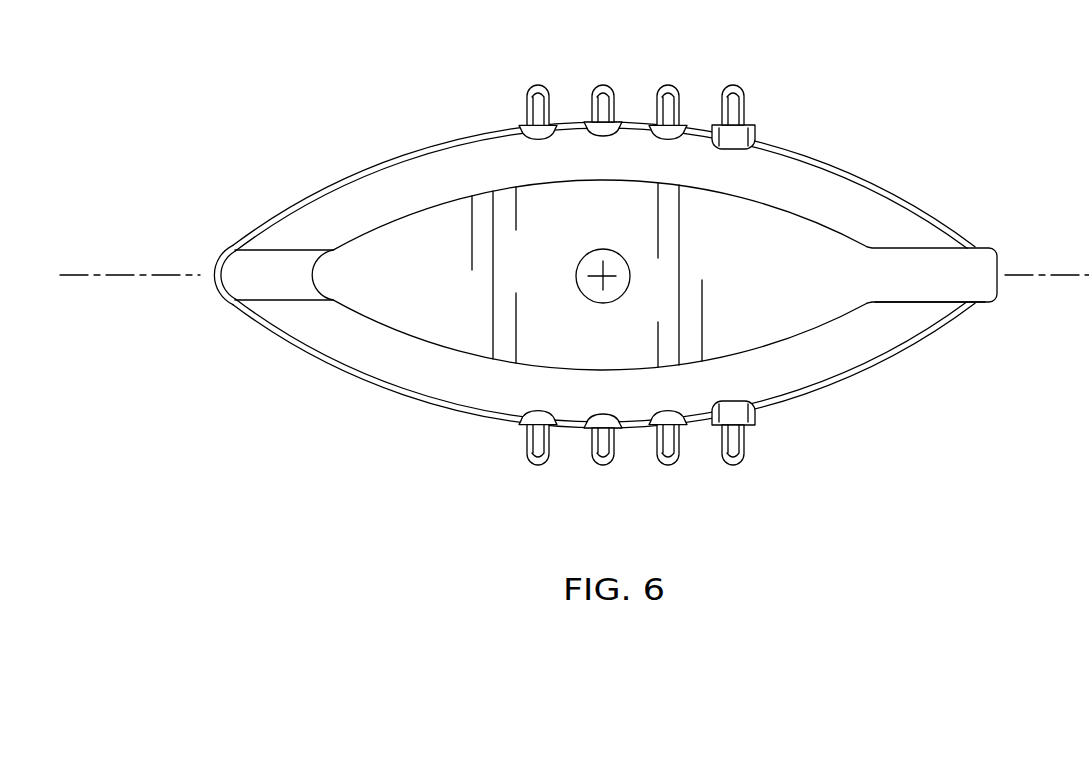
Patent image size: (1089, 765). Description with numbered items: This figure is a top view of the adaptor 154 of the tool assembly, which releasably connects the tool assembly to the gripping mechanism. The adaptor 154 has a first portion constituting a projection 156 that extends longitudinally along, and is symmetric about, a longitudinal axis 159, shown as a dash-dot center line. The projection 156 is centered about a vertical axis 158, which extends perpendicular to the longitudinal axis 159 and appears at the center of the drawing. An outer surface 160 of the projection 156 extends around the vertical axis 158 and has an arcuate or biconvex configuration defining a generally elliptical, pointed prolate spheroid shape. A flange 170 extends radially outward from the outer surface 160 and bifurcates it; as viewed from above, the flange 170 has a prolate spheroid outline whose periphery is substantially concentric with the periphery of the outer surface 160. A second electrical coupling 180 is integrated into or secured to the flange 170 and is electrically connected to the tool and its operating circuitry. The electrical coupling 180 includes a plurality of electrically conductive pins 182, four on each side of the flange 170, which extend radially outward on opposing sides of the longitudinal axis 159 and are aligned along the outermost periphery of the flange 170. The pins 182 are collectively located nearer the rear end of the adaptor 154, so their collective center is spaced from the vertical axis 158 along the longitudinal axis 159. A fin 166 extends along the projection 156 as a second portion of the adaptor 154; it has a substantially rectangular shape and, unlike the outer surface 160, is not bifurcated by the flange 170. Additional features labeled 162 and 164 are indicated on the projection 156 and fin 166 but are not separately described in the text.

The adaptor 154 is at (818, 155).
The projection 156 is at (426, 212).
The vertical axis 158 is at (596, 282).
The longitudinal axis 159 is at (1088, 270).
The outer surface 160 is at (419, 341).
The inner surface 162 is at (768, 358).
The tab lower edge 164 is at (900, 313).
The fin 166 is at (952, 266).
The flange 170 is at (458, 405).
The electrical coupling 180 is at (559, 69).
The electrically conductive pins 182 is at (665, 467).